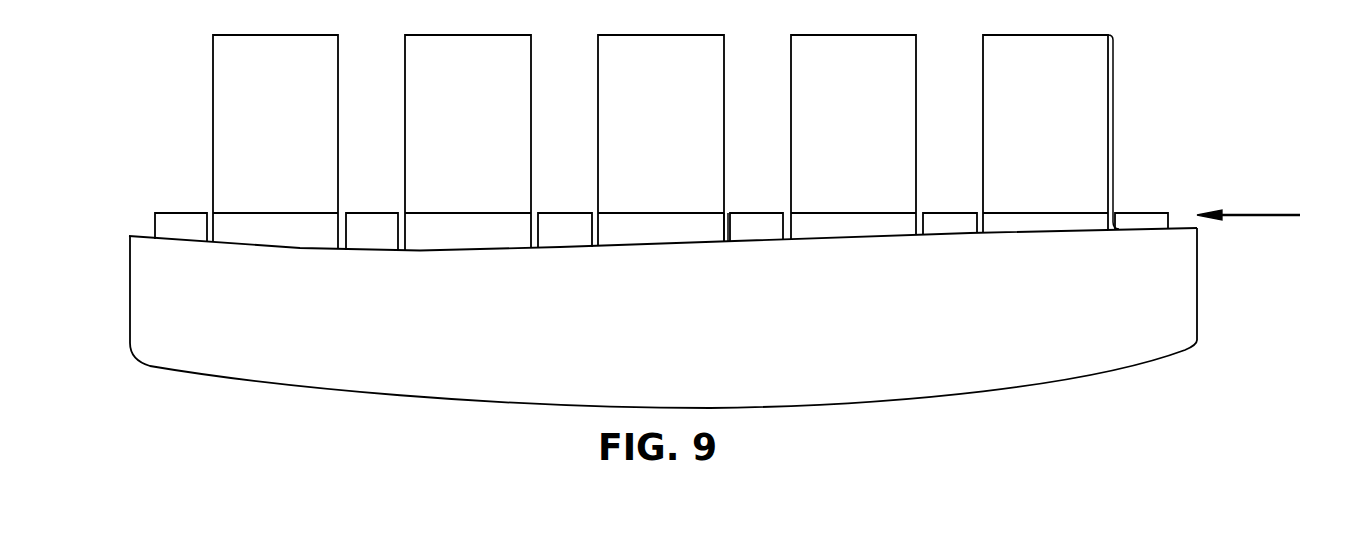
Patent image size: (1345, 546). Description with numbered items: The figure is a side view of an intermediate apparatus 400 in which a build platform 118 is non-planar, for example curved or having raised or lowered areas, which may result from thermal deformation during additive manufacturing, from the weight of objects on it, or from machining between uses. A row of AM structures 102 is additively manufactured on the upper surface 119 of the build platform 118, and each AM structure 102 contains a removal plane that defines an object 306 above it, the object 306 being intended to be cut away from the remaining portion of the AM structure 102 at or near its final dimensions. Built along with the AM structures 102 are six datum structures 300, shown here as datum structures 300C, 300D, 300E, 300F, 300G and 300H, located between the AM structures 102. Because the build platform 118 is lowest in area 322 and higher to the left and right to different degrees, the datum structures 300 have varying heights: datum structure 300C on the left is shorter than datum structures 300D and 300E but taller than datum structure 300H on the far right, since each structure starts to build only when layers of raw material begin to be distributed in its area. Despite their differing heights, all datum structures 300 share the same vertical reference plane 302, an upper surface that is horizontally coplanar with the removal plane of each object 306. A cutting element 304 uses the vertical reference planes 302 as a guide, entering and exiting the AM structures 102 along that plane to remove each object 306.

The AM structure 102 is at (703, 26).
The build platform 118 is at (925, 355).
The upper surface 119 is at (726, 232).
The datum structure 300 is at (741, 196).
The datum structure 300C is at (178, 222).
The datum structure 300D is at (375, 222).
The datum structure 300E is at (568, 227).
The datum structure 300F is at (765, 223).
The datum structure 300G is at (957, 223).
The datum structure 300H is at (1170, 220).
The vertical reference plane 302 is at (1143, 212).
The cutting element 304 is at (1247, 215).
The object 306 is at (630, 48).
The area 322 is at (410, 297).
The intermediate apparatus 400 is at (1208, 61).